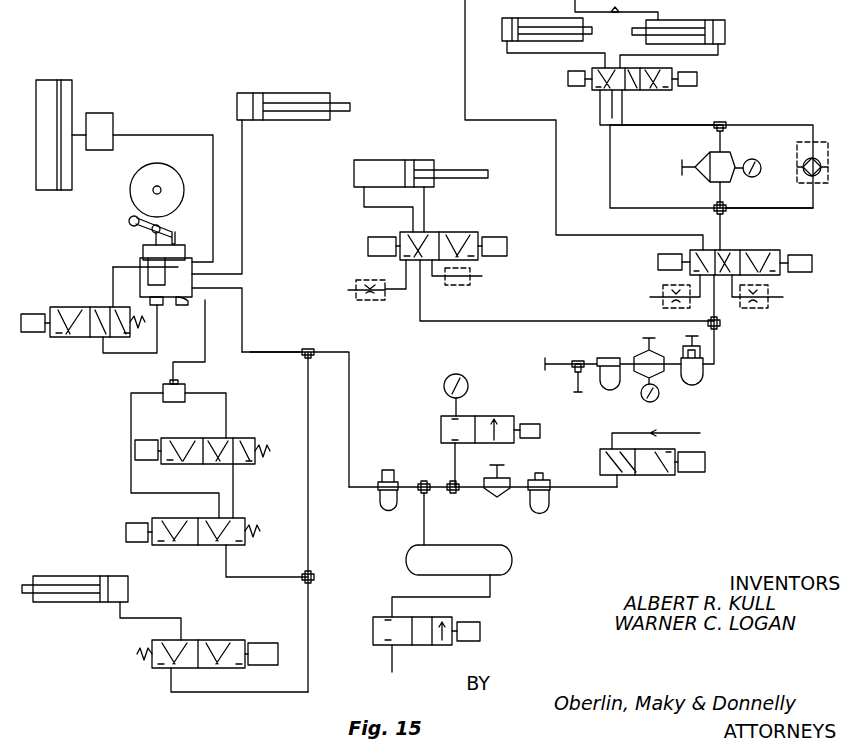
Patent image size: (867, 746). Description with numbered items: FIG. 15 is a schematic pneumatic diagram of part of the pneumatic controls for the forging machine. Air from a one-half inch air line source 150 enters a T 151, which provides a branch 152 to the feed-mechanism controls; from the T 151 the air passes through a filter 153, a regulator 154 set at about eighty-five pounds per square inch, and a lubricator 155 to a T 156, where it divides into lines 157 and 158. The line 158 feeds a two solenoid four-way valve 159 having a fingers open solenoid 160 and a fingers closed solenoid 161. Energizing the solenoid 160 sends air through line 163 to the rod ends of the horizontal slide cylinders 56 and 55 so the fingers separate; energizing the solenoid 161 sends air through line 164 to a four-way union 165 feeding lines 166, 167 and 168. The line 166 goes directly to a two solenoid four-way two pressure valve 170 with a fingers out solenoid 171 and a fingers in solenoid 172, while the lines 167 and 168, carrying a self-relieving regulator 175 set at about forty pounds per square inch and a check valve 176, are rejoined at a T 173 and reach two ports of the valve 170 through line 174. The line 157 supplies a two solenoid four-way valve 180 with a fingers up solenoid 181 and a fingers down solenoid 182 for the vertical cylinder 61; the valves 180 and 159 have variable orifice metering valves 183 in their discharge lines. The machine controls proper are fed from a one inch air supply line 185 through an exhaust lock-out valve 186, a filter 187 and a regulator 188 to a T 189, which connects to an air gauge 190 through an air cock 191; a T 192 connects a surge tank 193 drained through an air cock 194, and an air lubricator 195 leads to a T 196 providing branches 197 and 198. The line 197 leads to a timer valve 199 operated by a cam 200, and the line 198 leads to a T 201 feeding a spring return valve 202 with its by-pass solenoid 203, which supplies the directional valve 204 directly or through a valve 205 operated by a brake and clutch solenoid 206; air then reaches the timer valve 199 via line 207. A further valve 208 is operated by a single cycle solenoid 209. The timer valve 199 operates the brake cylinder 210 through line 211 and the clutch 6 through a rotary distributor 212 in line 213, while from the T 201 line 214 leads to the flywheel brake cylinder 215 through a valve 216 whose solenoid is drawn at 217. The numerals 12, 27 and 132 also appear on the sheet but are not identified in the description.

The air-operated clutch 6 is at (74, 90).
The machine 12 is at (805, 12).
The member 27 is at (147, 0).
The member 132 is at (232, 4).
The pneumatic cylinder assembly 55 is at (685, 20).
The pneumatic cylinder assembly 56 is at (530, 54).
The pneumatic piston cylinder assembly 61 is at (390, 160).
The air line source 150 is at (556, 360).
The T 151 is at (578, 360).
The branch 152 is at (556, 366).
The filter 153 is at (606, 388).
The regulator 154 is at (660, 385).
The lubricator 155 is at (703, 378).
The T 156 is at (716, 330).
The line 157 is at (610, 321).
The line 158 is at (716, 300).
The two solenoid four-way valve 159 is at (780, 250).
The fingers open solenoid 160 is at (658, 262).
The fingers closed solenoid 161 is at (812, 272).
The line 163 is at (465, 68).
The line 164 is at (722, 236).
The four-way union 165 is at (714, 211).
The line 166 is at (610, 180).
The line 167 is at (745, 147).
The line 168 is at (758, 208).
The two solenoid four-way two pressure valve 170 is at (668, 91).
The fingers out solenoid 171 is at (568, 82).
The fingers in solenoid 172 is at (697, 79).
The T 173 is at (725, 123).
The line 174 is at (653, 126).
The self-relieving regulator 175 is at (704, 182).
The check valve 176 is at (818, 142).
The two solenoid four-way valve 180 is at (472, 232).
The fingers up solenoid 181 is at (368, 245).
The fingers down solenoid 182 is at (507, 250).
The variable orifice metering valve 183 is at (390, 300).
The air supply line 185 is at (700, 433).
The exhaust lock-out valve 186 is at (640, 476).
The filter 187 is at (549, 505).
The regulator 188 is at (497, 498).
The T 189 is at (453, 493).
The air gauge 190 is at (450, 374).
The air cock 191 is at (440, 424).
The T 192 is at (424, 482).
The surge tank 193 is at (510, 570).
The air cock 194 is at (440, 647).
The air lubricator 195 is at (390, 512).
The T 196 is at (308, 348).
The line 197 is at (275, 353).
The line 198 is at (309, 513).
The timer valve 199 is at (132, 244).
The cam 200 is at (140, 184).
The T 201 is at (311, 573).
The single solenoid four-way spring return valve 202 is at (246, 520).
The by-pass solenoid 203 is at (126, 533).
The directional valve 204 is at (186, 388).
The single solenoid four-way spring return valve 205 is at (252, 438).
The brake and clutch solenoid 206 is at (135, 450).
The line 207 is at (205, 327).
The single solenoid four-way spring return valve 208 is at (86, 337).
The single cycle solenoid 209 is at (34, 313).
The brake cylinder 210 is at (290, 121).
The line 211 is at (243, 190).
The rotary distributor 212 is at (113, 118).
The line 213 is at (180, 136).
The line 214 is at (226, 693).
The flywheel brake cylinder 215 is at (78, 603).
The single solenoid four-way spring return valve 216 is at (212, 640).
The solenoid 217 is at (264, 643).